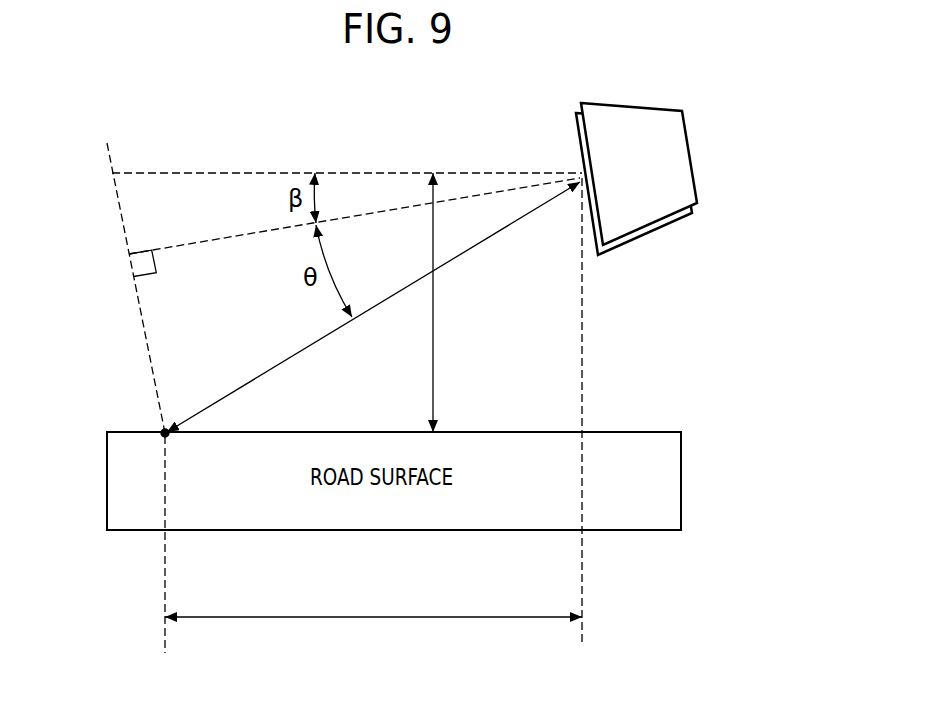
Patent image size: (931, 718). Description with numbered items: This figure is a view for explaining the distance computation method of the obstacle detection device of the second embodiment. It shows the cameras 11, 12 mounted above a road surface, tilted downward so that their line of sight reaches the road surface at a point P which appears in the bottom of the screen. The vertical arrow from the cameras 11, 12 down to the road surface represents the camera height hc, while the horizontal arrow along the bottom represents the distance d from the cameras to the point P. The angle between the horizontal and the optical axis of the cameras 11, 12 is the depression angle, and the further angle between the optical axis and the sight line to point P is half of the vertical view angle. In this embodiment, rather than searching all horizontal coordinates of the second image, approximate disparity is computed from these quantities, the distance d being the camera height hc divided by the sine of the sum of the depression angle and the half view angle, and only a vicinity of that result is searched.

The camera 11 is at (690, 153).
The camera 12 is at (660, 232).
The point on the road surface P is at (160, 431).
The camera height hc is at (433, 380).
The distance to the road surface d is at (373, 597).